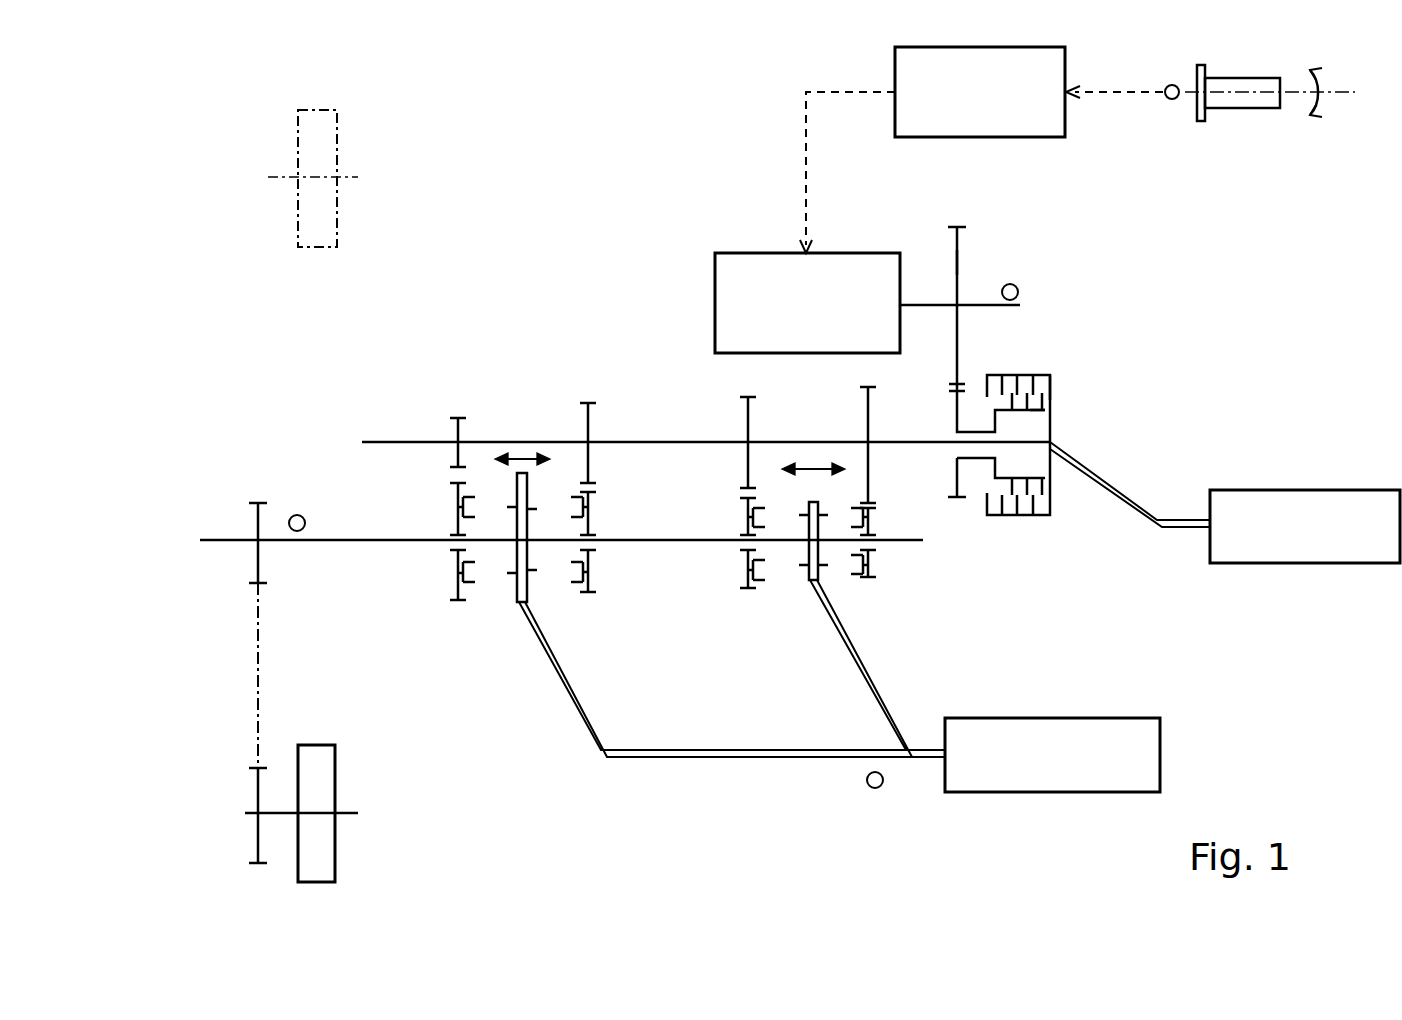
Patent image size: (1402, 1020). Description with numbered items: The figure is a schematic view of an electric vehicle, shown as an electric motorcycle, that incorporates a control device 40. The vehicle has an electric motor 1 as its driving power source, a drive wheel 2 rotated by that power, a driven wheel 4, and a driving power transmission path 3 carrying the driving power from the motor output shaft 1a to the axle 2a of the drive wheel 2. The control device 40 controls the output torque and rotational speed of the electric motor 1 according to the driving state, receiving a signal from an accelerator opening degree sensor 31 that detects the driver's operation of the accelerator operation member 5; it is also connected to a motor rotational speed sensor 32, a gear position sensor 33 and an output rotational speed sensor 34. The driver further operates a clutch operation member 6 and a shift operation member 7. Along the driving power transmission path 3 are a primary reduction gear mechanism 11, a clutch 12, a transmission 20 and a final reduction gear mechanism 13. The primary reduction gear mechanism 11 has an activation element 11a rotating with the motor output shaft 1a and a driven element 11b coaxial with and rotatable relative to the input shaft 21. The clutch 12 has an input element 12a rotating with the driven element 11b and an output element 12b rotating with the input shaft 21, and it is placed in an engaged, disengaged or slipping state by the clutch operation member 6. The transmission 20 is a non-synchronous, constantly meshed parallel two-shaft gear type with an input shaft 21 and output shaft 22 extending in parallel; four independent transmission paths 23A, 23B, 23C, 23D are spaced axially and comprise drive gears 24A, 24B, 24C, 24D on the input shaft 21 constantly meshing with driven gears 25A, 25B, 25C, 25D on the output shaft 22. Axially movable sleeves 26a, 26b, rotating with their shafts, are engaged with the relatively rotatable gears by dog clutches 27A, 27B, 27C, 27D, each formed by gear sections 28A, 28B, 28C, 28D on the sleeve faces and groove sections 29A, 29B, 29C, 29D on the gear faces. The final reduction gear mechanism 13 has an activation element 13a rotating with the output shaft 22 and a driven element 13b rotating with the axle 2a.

The electric motor 1 is at (740, 253).
The motor output shaft 1a is at (913, 305).
The drive wheel 2 is at (333, 815).
The axle 2a is at (345, 815).
The driving power transmission path 3 is at (1150, 292).
The driven wheel 4 is at (337, 148).
The accelerator operation member 5 is at (1247, 121).
The clutch operation member 6 is at (1313, 563).
The shift operation member 7 is at (1052, 792).
The primary reduction gear mechanism 11 is at (1062, 359).
The activation element 11a is at (957, 262).
The driven element 11b is at (950, 487).
The clutch 12 is at (1058, 370).
The input element 12a is at (1035, 404).
The output element 12b is at (1052, 390).
The final reduction gear mechanism 13 is at (208, 610).
The activation element 13a is at (258, 510).
The driven element 13b is at (256, 836).
The transmission 20 is at (642, 358).
The input shaft 21 is at (366, 442).
The output shaft 22 is at (325, 545).
The transmission path 23A is at (888, 381).
The transmission path 23B is at (740, 387).
The transmission path 23C is at (588, 385).
The transmission path 23D is at (458, 400).
The drive gear 24A is at (869, 418).
The drive gear 24B is at (747, 420).
The drive gear 24C is at (590, 404).
The drive gear 24D is at (455, 417).
The driven gear 25A is at (936, 590).
The driven gear 25B is at (700, 590).
The driven gear 25C is at (639, 587).
The driven gear 25D is at (411, 597).
The sleeve 26a is at (849, 535).
The sleeve 26b is at (536, 531).
The dog clutch 27A is at (898, 664).
The dog clutch 27B is at (808, 677).
The dog clutch 27C is at (580, 677).
The dog clutch 27D is at (385, 704).
The gear section 28A is at (829, 572).
The gear section 28B is at (801, 572).
The gear section 28C is at (537, 572).
The gear section 28D is at (512, 573).
The groove section 29A is at (858, 572).
The groove section 29B is at (764, 585).
The groove section 29C is at (580, 585).
The groove section 29D is at (468, 583).
The accelerator opening degree sensor 31 is at (1171, 100).
The motor rotational speed sensor 32 is at (1018, 292).
The gear position sensor 33 is at (875, 788).
The output rotational speed sensor 34 is at (297, 515).
The control device 40 is at (1066, 68).